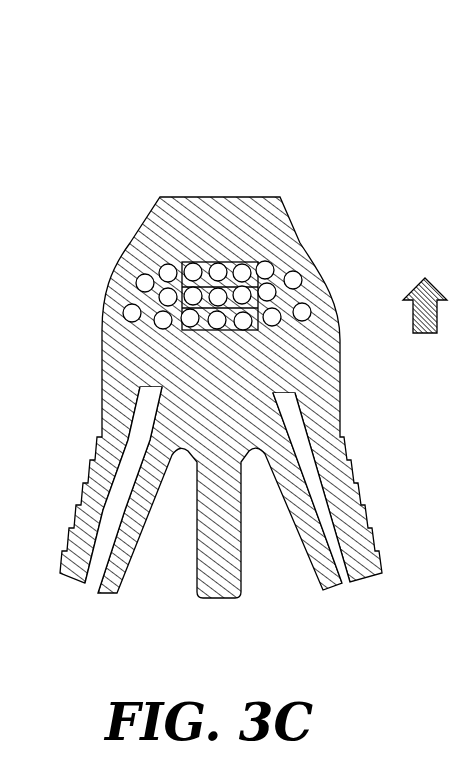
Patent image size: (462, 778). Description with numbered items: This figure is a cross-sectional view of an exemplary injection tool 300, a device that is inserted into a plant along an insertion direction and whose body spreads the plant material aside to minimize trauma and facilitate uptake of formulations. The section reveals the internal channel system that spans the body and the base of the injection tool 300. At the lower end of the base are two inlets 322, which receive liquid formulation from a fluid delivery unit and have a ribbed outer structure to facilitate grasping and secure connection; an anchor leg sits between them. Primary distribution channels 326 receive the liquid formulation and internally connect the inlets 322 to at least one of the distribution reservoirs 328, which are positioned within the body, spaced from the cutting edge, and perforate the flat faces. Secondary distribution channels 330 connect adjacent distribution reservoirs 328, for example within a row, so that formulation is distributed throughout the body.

The injection tool 300 is at (93, 126).
The inlets 322 is at (86, 583).
The primary distribution channels 326 is at (280, 381).
The distribution reservoirs 328 is at (180, 280).
The secondary distribution channels 330 is at (237, 260).